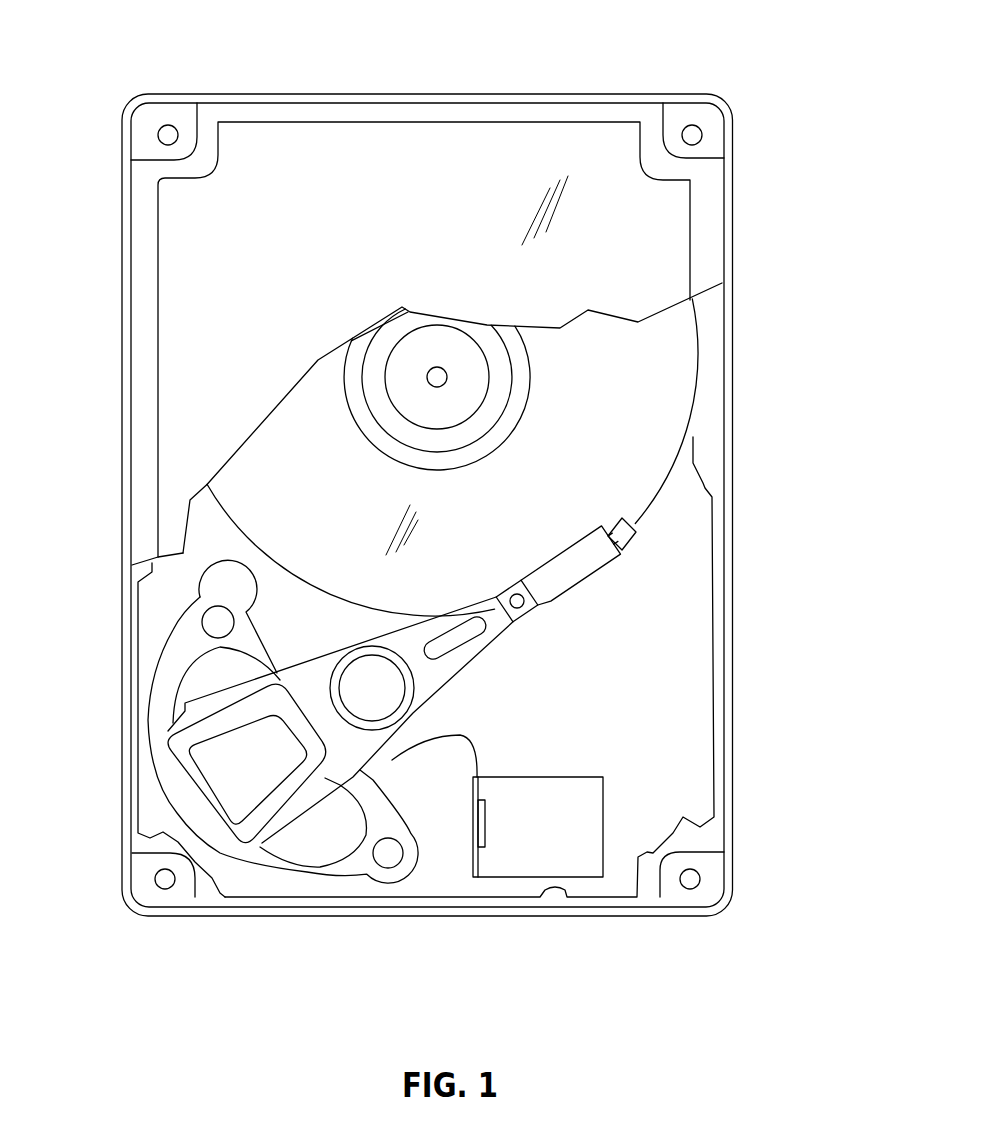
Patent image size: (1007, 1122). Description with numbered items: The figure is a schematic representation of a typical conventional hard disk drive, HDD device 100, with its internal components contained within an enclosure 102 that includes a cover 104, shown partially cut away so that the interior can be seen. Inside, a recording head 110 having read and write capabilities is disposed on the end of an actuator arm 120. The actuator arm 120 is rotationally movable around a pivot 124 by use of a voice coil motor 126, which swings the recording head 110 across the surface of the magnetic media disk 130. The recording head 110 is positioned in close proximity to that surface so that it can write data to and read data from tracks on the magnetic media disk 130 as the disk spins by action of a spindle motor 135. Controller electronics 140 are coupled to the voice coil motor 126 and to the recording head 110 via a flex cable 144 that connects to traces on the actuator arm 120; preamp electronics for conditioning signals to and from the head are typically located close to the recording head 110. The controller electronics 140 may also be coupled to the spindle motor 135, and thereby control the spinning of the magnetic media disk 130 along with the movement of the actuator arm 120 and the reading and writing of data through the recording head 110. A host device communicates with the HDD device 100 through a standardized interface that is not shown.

The HDD device 100 is at (670, 50).
The enclosure 102 is at (735, 365).
The cover 104 is at (178, 360).
The recording head 110 is at (630, 539).
The actuator arm 120 is at (460, 670).
The pivot 124 is at (363, 650).
The voice coil motor 126 is at (255, 852).
The magnetic media disk 130 is at (302, 558).
The spindle motor 135 is at (357, 423).
The controller electronics 140 is at (587, 810).
The flex cable 144 is at (477, 747).